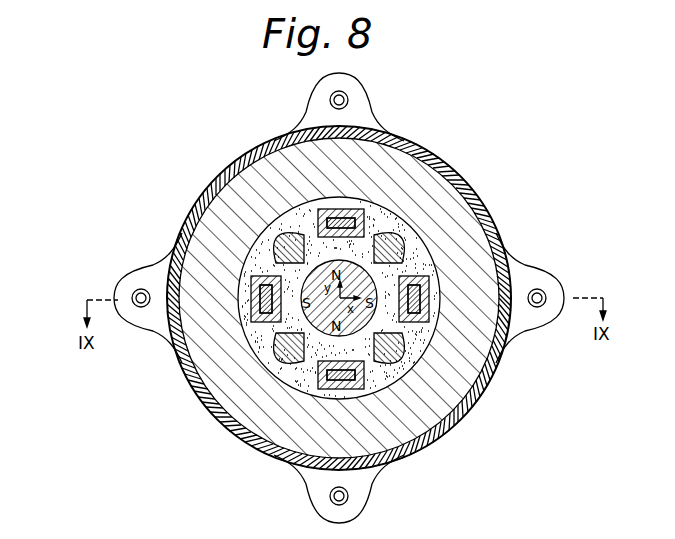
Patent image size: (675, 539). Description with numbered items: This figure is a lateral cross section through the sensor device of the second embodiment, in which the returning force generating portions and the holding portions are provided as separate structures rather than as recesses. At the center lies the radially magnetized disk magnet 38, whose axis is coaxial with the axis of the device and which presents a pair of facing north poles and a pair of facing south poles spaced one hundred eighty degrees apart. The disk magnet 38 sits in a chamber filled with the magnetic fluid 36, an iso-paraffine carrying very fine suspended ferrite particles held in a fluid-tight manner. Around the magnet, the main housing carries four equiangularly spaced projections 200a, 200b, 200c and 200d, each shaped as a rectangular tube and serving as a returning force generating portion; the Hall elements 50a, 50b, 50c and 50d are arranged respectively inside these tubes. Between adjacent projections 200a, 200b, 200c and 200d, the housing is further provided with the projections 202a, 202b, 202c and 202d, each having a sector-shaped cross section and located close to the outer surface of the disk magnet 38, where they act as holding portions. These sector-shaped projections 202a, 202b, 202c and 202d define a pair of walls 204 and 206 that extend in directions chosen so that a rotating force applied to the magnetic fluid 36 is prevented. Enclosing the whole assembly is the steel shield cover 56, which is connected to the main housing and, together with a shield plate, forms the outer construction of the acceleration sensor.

The magnetic fluid 36 is at (445, 250).
The disk magnet 38 is at (257, 323).
The Hall element 50a is at (512, 340).
The Hall element 50b is at (398, 138).
The Hall element 50c is at (250, 305).
The Hall element 50d is at (428, 440).
The shield cover 56 is at (522, 264).
The projection (returning force generating portion) 200a is at (430, 322).
The projection (returning force generating portion) 200b is at (364, 215).
The projection (returning force generating portion) 200c is at (200, 398).
The projection (returning force generating portion) 200d is at (341, 389).
The projection (holding portion) 202a is at (395, 240).
The projection (holding portion) 202b is at (392, 352).
The projection (holding portion) 202c is at (282, 365).
The projection (holding portion) 202d is at (283, 243).
The wall 204 is at (315, 213).
The wall 206 is at (252, 277).